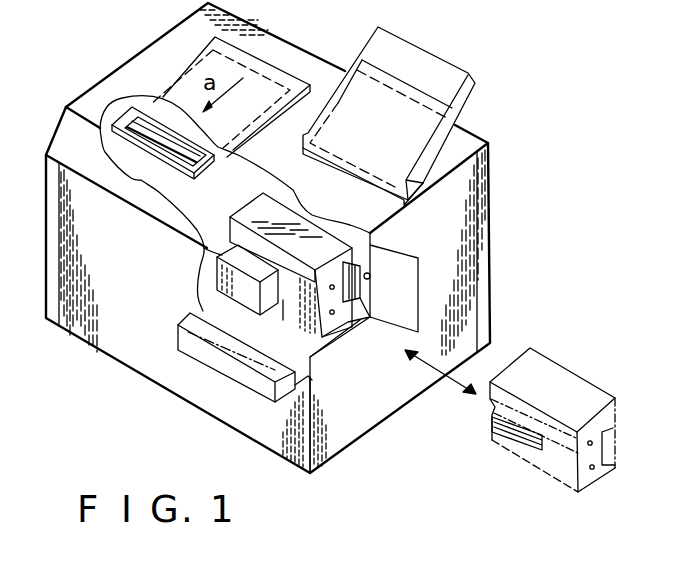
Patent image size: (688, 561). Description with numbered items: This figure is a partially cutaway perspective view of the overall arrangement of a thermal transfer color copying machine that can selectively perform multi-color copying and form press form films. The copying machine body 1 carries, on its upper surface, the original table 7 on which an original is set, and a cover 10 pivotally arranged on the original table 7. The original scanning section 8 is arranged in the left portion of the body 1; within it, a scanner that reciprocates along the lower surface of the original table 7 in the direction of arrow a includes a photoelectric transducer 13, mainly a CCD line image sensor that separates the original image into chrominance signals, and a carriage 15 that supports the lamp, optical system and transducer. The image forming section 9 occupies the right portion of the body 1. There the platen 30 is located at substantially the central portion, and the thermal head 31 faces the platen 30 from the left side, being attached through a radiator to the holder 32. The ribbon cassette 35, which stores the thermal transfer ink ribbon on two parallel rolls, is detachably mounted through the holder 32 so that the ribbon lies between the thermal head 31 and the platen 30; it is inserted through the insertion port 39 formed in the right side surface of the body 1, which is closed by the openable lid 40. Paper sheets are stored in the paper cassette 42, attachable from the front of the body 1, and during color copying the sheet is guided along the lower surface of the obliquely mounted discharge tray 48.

The copying machine body 1 is at (484, 210).
The original table 7 is at (177, 83).
The original scanning section 8 is at (141, 178).
The image forming section 9 is at (311, 377).
The cover 10 is at (277, 77).
The photoelectric transducer 13 is at (187, 166).
The carriage 15 is at (205, 167).
The platen 30 is at (370, 275).
The thermal head 31 is at (360, 318).
The holder 32 is at (200, 270).
The ribbon cassette 35 is at (277, 197).
The insertion port 39 is at (335, 324).
The lid 40 is at (413, 297).
The paper cassette 42 is at (233, 372).
The discharge tray 48 is at (470, 74).